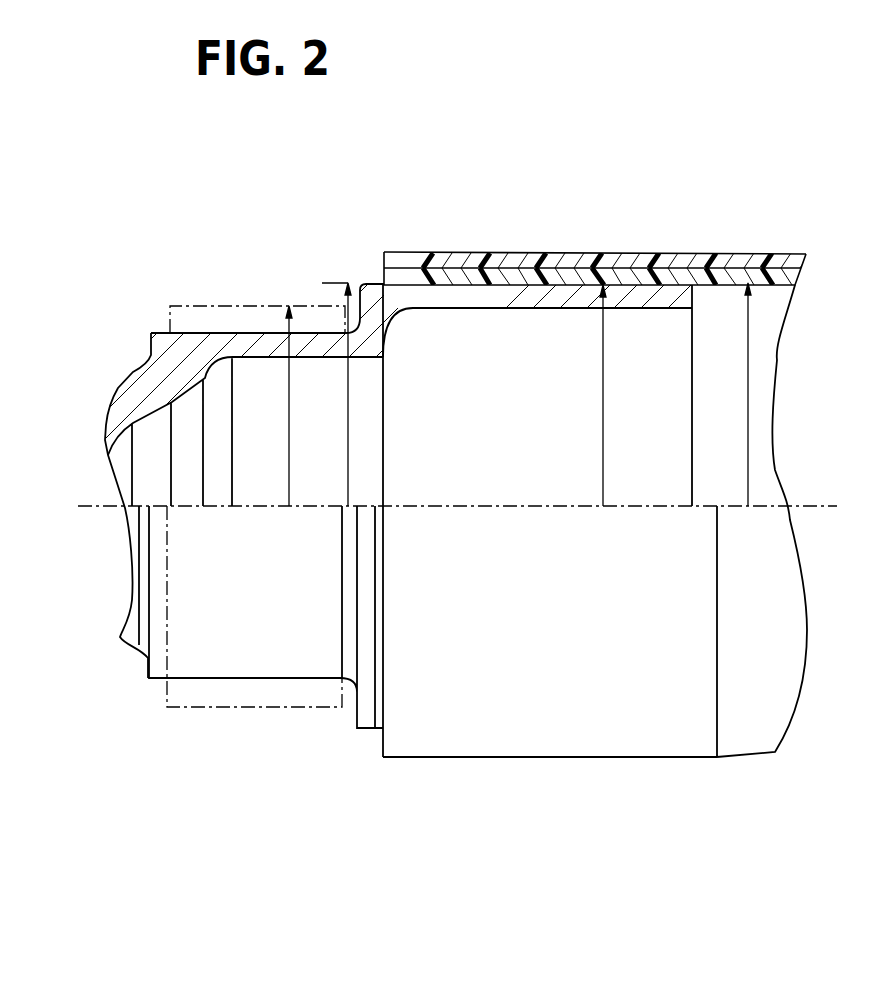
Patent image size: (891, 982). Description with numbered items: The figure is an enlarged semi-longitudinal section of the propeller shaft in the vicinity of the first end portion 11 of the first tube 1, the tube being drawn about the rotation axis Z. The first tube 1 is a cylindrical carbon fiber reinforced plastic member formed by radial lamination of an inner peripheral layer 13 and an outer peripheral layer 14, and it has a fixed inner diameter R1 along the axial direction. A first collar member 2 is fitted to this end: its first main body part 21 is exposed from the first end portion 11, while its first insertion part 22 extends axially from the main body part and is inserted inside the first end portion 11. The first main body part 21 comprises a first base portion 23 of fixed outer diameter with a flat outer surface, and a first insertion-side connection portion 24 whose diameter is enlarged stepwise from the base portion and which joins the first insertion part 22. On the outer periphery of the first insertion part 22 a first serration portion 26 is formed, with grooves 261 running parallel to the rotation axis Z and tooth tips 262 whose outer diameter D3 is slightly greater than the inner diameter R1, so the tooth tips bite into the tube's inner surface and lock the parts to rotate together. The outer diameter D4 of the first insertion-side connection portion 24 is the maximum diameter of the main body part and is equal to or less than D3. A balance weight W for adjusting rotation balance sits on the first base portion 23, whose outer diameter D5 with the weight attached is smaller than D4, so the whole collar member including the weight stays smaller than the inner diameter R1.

The first tube 1 is at (577, 760).
The first end portion 11 is at (490, 758).
The inner peripheral layer 13 is at (707, 277).
The outer peripheral layer 14 is at (672, 255).
The first collar member 2 is at (256, 681).
The first main body part 21 is at (327, 186).
The first insertion part 22 is at (460, 295).
The first base portion 23 is at (247, 340).
The first insertion-side connection portion 24 is at (368, 288).
The first serration portion 26 is at (537, 170).
The groove 261 is at (515, 284).
The tooth tips 262 is at (470, 284).
The balance weight W is at (182, 305).
The outer diameter of tooth tips D3 is at (603, 400).
The outer diameter of first insertion-side connection portion D4 is at (347, 470).
The outer diameter of first base portion with balance weight D5 is at (288, 447).
The inner diameter of first tube R1 is at (748, 360).
The rotation axis Z is at (820, 502).